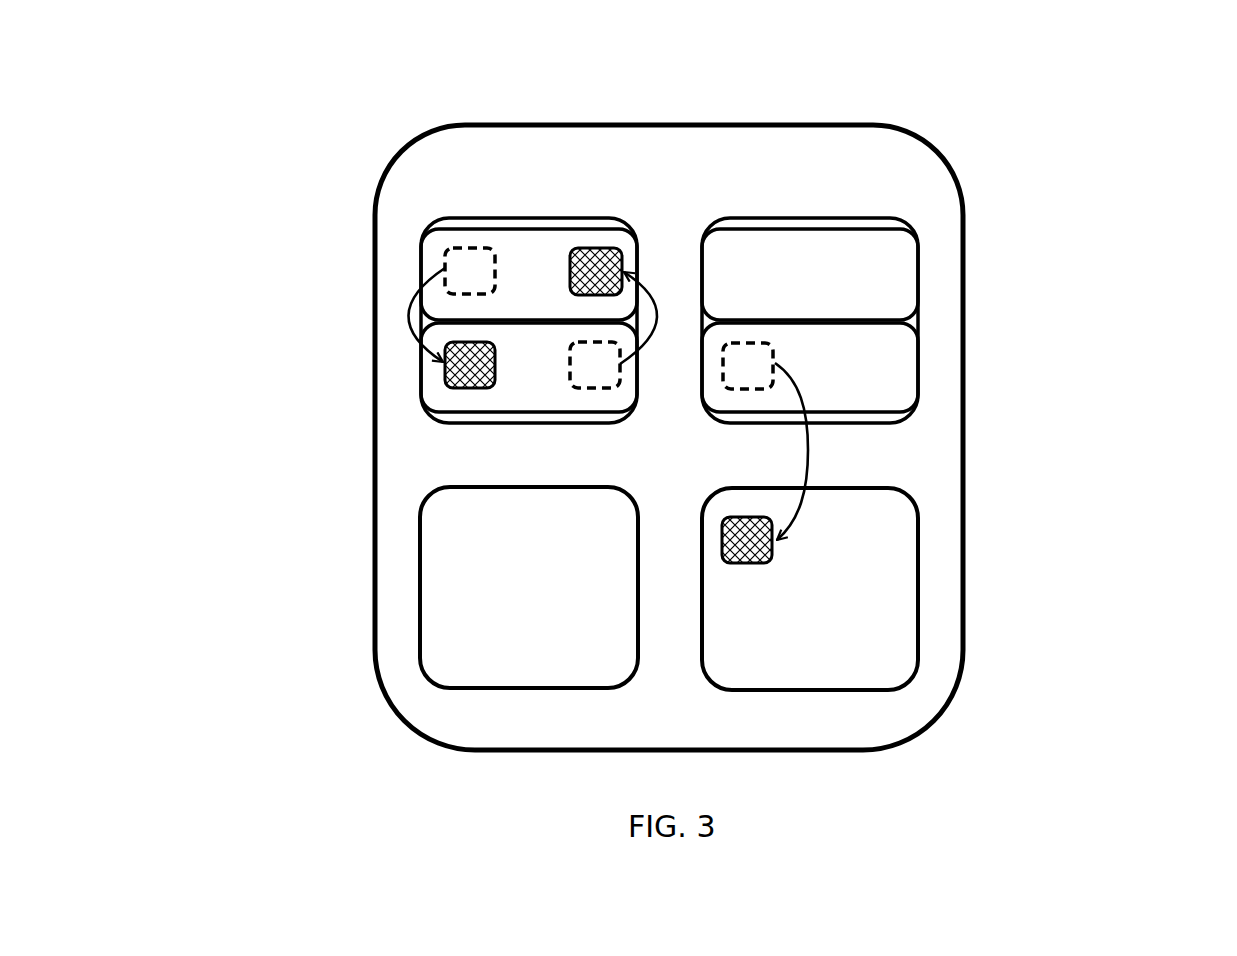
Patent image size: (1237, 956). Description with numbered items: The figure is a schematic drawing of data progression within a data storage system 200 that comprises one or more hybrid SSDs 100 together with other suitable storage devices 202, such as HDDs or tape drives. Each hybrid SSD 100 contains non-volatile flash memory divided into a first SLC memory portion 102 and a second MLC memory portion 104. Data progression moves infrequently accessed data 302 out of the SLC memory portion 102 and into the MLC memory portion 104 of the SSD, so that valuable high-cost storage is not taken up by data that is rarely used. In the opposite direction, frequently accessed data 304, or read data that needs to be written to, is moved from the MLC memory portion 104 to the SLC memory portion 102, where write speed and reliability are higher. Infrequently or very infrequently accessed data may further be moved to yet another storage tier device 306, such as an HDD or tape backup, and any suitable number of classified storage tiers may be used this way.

The hybrid SSD 100 is at (810, 218).
The SLC memory portion 102 is at (528, 230).
The MLC memory portion 104 is at (523, 422).
The data storage system 200 is at (1062, 182).
The storage device 202 is at (420, 588).
The infrequently accessed data 302 is at (495, 365).
The frequently accessed data 304 is at (570, 271).
The storage tier device 306 is at (745, 562).